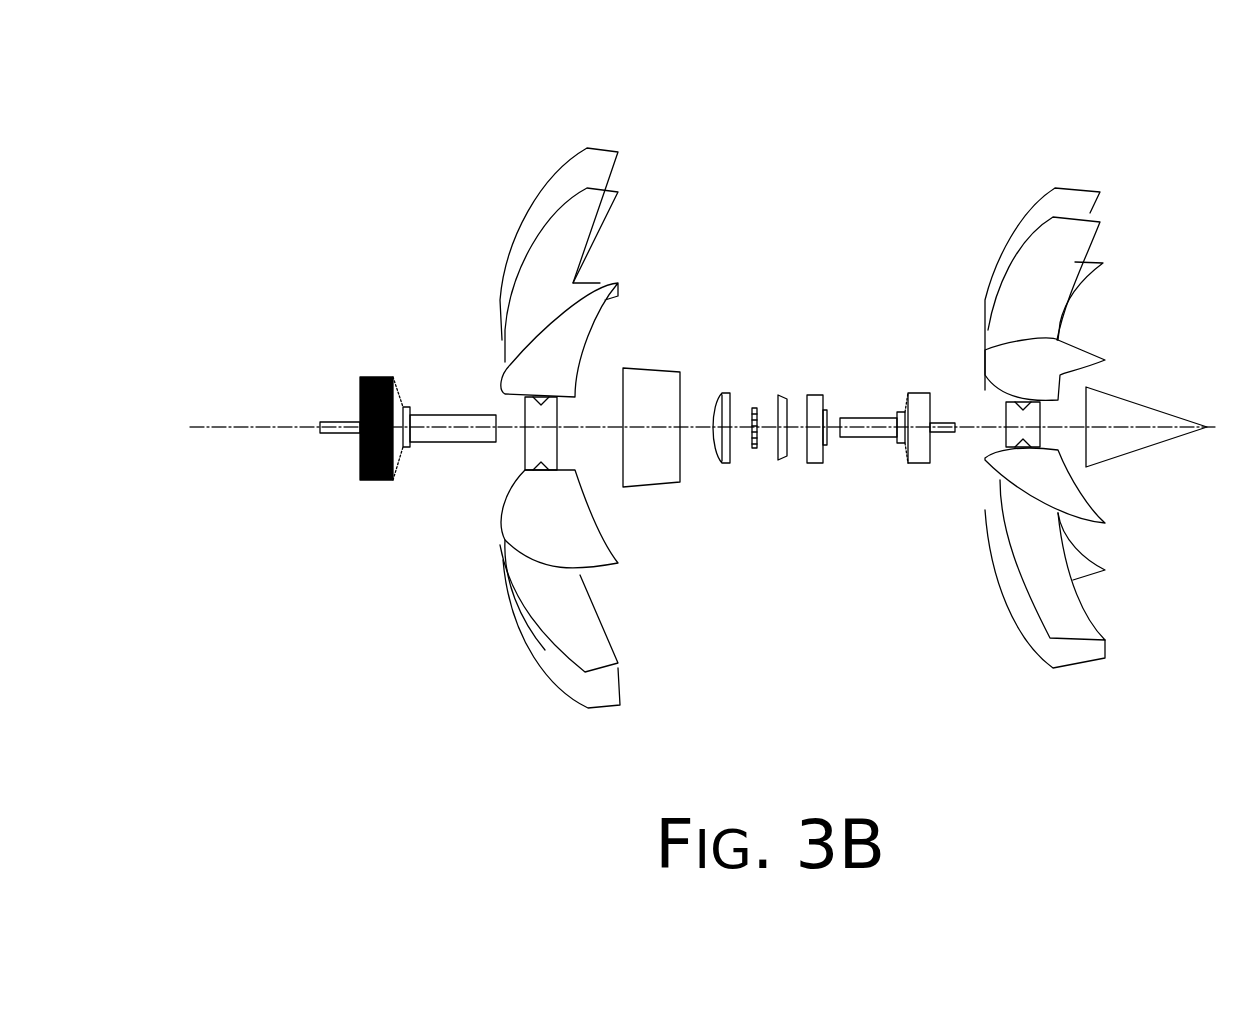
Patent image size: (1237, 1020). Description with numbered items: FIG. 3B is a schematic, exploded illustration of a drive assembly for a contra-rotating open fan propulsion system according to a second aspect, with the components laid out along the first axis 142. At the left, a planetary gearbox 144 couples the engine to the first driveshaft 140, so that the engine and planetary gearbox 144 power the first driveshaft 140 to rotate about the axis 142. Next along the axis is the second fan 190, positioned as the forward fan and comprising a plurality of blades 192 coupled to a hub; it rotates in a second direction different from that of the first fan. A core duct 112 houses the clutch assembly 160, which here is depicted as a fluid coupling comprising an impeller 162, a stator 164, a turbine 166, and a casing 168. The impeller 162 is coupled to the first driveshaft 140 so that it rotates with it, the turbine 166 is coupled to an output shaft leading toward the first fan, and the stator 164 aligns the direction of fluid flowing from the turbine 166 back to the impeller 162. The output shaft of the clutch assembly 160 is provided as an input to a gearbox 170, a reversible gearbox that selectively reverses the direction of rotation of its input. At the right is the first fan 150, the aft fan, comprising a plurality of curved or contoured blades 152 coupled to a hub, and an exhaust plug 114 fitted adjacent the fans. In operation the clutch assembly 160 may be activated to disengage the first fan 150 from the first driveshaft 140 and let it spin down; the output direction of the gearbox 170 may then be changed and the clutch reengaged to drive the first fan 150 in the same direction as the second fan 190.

The core duct 112 is at (640, 365).
The exhaust plug 114 is at (1130, 418).
The first driveshaft 140 is at (446, 392).
The first axis 142 is at (258, 428).
The planetary gearbox 144 is at (378, 378).
The first fan 150 is at (1082, 135).
The blades 152 is at (1018, 252).
The clutch assembly 160 is at (880, 367).
The impeller 162 is at (720, 463).
The stator 164 is at (755, 448).
The turbine 166 is at (785, 460).
The casing 168 is at (820, 463).
The gearbox 170 is at (921, 463).
The second fan 190 is at (608, 128).
The blades 192 is at (585, 212).